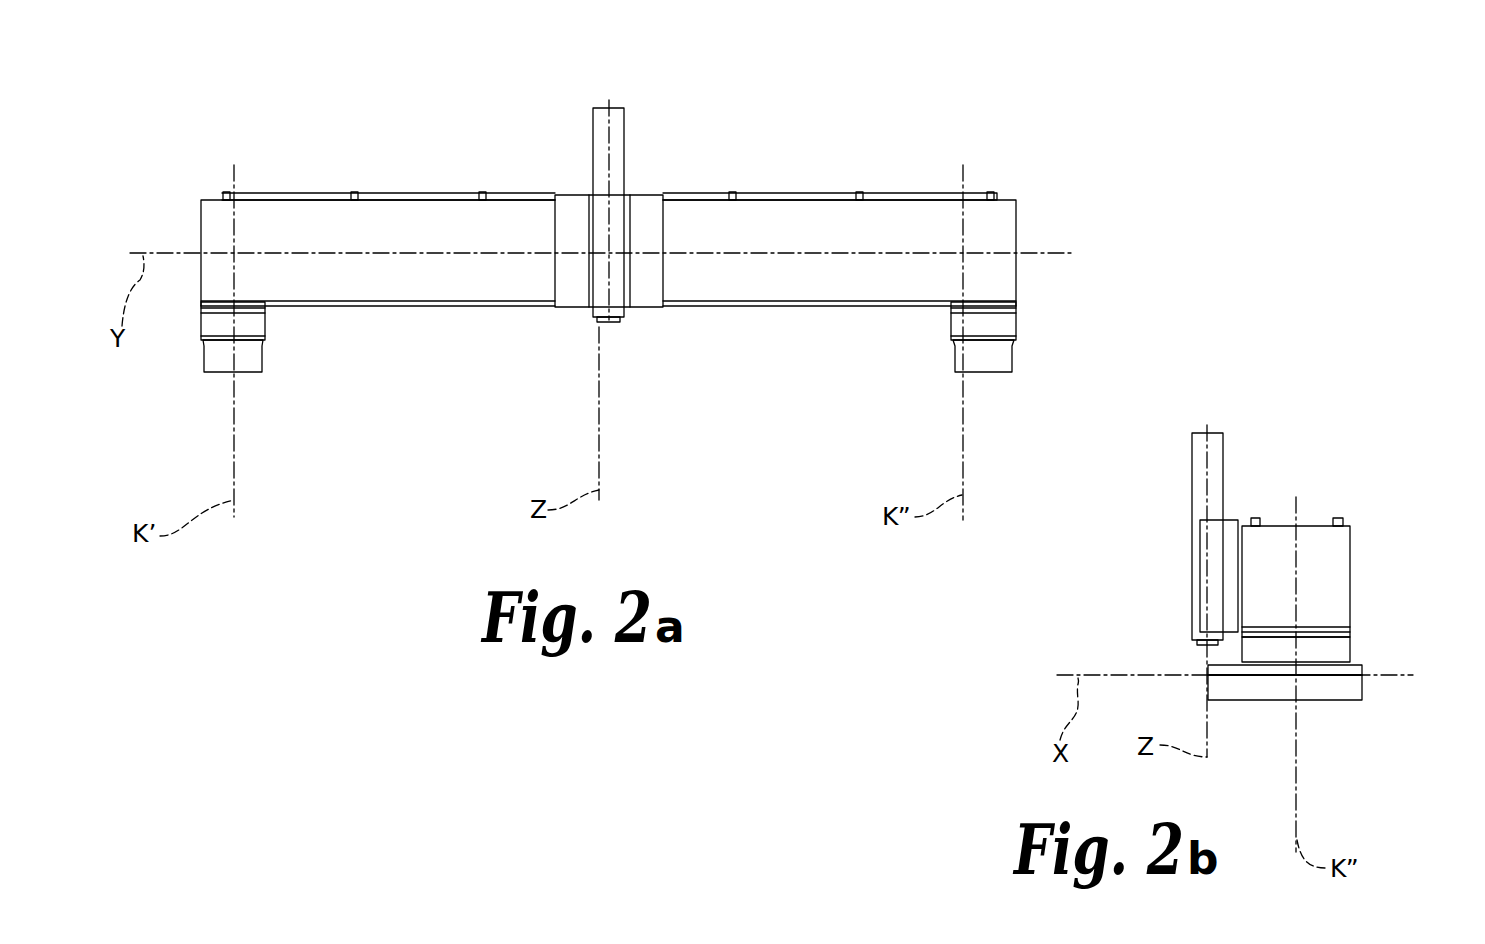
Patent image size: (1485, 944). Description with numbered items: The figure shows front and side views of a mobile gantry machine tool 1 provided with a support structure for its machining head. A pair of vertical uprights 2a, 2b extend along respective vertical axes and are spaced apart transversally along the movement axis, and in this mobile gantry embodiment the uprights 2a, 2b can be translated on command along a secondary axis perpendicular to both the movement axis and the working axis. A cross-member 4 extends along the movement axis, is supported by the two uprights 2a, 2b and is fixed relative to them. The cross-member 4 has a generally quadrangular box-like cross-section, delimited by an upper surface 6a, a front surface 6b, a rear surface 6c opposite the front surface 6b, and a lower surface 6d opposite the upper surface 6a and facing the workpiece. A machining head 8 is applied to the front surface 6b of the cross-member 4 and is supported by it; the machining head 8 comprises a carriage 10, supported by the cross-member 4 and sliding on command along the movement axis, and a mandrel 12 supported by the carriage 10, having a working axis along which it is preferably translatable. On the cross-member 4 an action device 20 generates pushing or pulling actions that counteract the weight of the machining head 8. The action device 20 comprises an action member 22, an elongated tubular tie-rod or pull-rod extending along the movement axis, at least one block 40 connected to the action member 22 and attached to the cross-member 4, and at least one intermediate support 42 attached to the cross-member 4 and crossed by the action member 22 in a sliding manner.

In FIG. 2A, the machine tool 1 is at (1102, 202).
In FIG. 2B, the machine tool 1 is at (1371, 425).
In FIG. 2A, the vertical upright 2a is at (256, 328).
In FIG. 2A, the vertical upright 2b is at (1012, 330).
In FIG. 2B, the vertical upright 2b is at (1323, 648).
In FIG. 2A, the cross-member 4 is at (503, 232).
In FIG. 2B, the cross-member 4 is at (1326, 548).
In FIG. 2A, the upper surface 6a is at (418, 193).
In FIG. 2B, the upper surface 6a is at (1305, 520).
In FIG. 2A, the front surface 6b is at (870, 198).
In FIG. 2B, the front surface 6b is at (1243, 604).
In FIG. 2B, the rear surface 6c is at (1358, 589).
In FIG. 2A, the lower surface 6d is at (820, 306).
In FIG. 2A, the machining head 8 is at (645, 185).
In FIG. 2B, the machining head 8 is at (1177, 589).
In FIG. 2A, the carriage 10 is at (647, 297).
In FIG. 2B, the carriage 10 is at (1232, 532).
In FIG. 2A, the mandrel 12 is at (591, 284).
In FIG. 2B, the mandrel 12 is at (1199, 490).
In FIG. 2A, the action device 20 is at (798, 193).
In FIG. 2A, the action member 22 is at (290, 198).
In FIG. 2A, the block 40 is at (216, 194).
In FIG. 2B, the block 40 is at (1254, 515).
In FIG. 2A, the intermediate support 42 is at (355, 190).